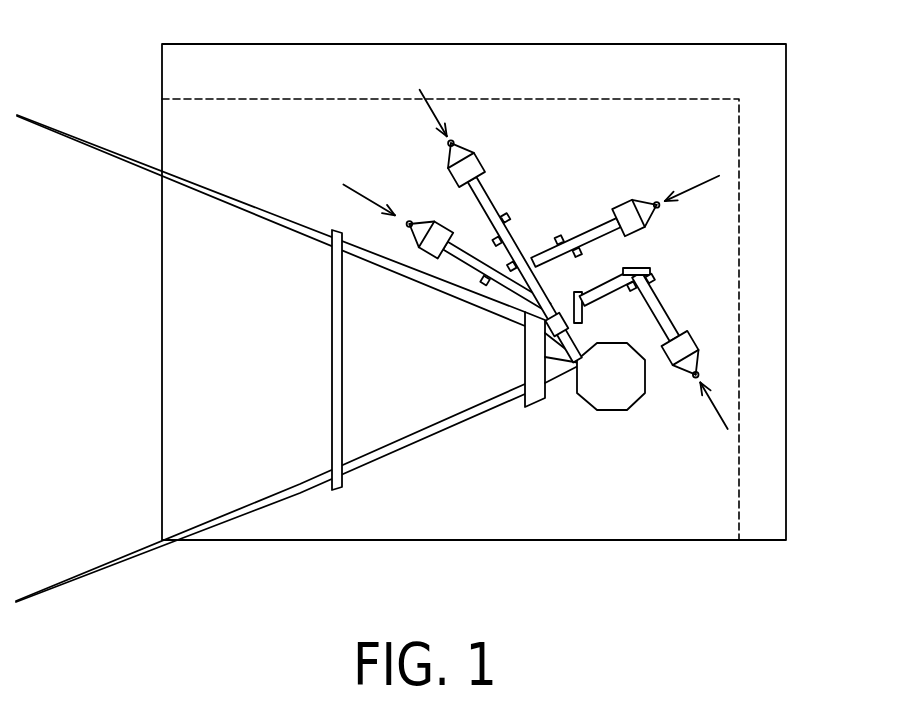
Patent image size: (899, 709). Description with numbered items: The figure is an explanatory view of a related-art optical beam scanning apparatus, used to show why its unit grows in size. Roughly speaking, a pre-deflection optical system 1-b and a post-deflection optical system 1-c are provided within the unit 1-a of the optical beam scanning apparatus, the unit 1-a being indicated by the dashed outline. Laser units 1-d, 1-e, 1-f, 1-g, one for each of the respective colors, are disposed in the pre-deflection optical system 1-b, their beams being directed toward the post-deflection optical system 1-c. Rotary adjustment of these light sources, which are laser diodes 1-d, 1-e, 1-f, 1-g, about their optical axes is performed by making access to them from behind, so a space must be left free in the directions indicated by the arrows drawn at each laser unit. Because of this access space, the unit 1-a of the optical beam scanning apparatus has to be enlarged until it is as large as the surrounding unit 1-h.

The unit of the optical beam scanning apparatus 1-a is at (747, 177).
The pre-deflection optical system 1-b is at (570, 208).
The post-deflection optical system 1-c is at (427, 380).
The laser unit 1-d is at (688, 330).
The laser unit 1-e is at (627, 201).
The laser unit 1-f is at (481, 161).
The laser unit 1-g is at (433, 219).
The unit 1-h is at (787, 275).